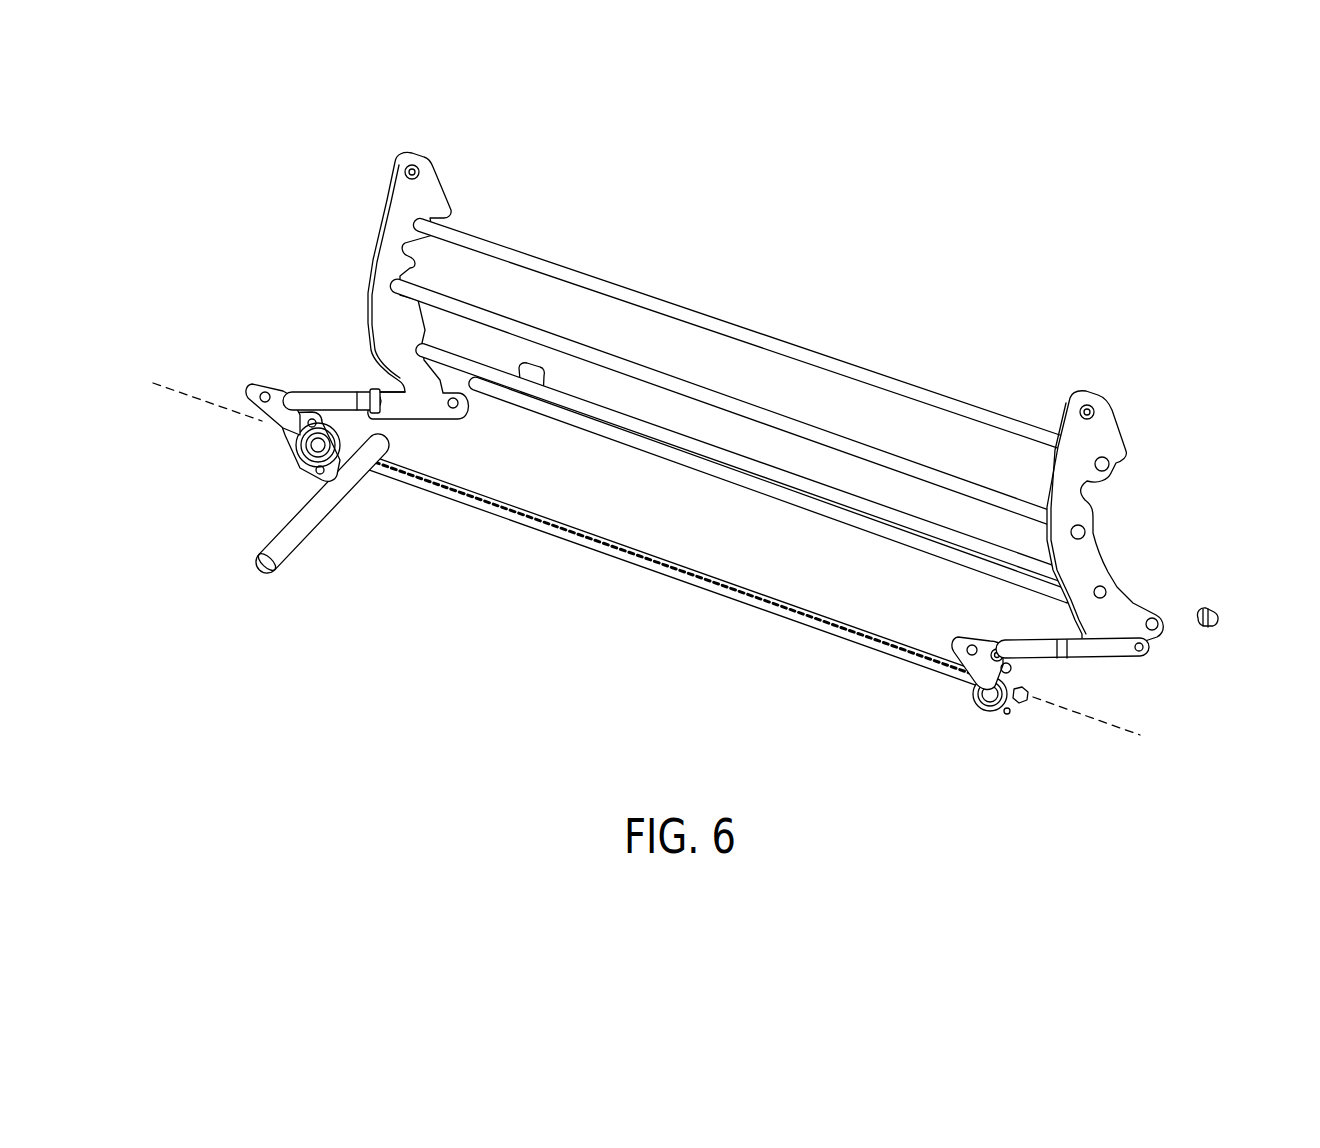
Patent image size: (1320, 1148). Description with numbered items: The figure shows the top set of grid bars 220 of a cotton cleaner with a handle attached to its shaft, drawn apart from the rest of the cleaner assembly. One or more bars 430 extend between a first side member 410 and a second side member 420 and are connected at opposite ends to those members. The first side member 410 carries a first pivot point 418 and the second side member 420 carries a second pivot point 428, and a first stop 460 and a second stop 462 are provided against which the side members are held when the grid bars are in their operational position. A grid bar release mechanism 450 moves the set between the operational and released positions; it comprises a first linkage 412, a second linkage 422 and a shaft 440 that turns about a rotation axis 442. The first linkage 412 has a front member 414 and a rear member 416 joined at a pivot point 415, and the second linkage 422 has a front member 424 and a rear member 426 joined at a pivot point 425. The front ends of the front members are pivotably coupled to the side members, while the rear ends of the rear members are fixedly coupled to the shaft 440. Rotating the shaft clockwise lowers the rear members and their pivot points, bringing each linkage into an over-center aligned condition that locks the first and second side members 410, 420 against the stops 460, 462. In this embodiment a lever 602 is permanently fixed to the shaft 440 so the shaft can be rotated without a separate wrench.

The top set of grid bars 220 is at (916, 261).
The first side member 410 is at (385, 232).
The first linkage 412 is at (232, 356).
The front member 414 is at (350, 391).
The pivot point 415 is at (295, 395).
The rear member 416 is at (282, 420).
The first pivot point 418 is at (421, 171).
The second side member 420 is at (1085, 560).
The second linkage 422 is at (938, 617).
The front member 424 is at (1030, 660).
The pivot point 425 is at (1000, 648).
The rear member 426 is at (972, 696).
The second pivot point 428 is at (1096, 412).
The bars 430 is at (757, 470).
The shaft 440 is at (623, 565).
The rotation axis 442 is at (217, 407).
The grid bar release mechanism 450 is at (482, 578).
The first stop 460 is at (532, 382).
The second stop 462 is at (1215, 628).
The lever 602 is at (310, 548).